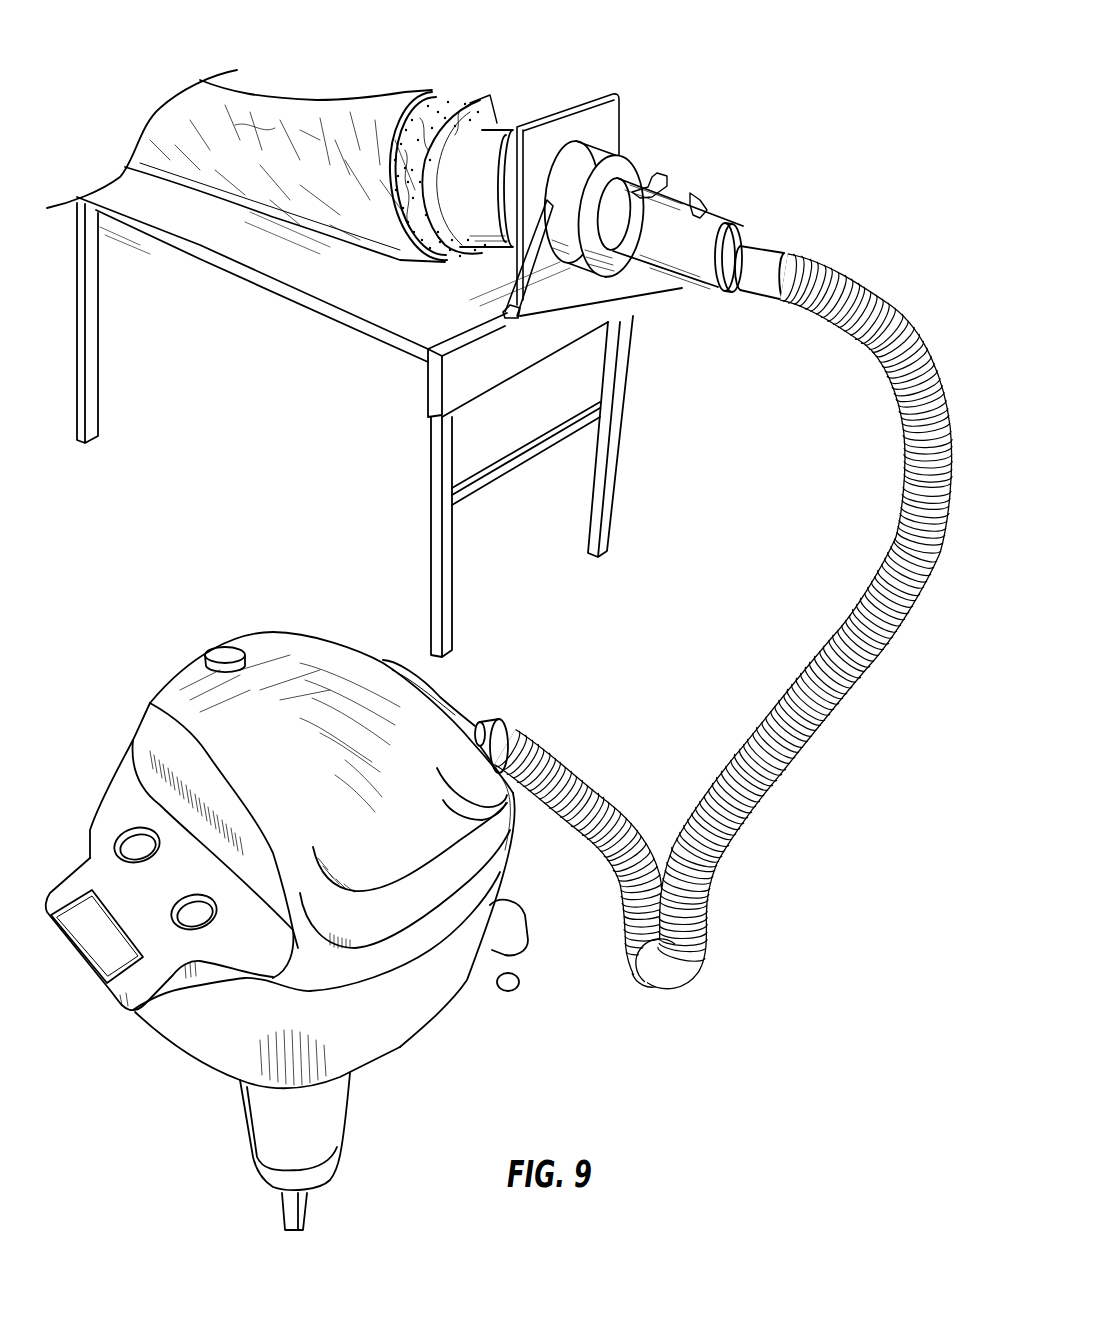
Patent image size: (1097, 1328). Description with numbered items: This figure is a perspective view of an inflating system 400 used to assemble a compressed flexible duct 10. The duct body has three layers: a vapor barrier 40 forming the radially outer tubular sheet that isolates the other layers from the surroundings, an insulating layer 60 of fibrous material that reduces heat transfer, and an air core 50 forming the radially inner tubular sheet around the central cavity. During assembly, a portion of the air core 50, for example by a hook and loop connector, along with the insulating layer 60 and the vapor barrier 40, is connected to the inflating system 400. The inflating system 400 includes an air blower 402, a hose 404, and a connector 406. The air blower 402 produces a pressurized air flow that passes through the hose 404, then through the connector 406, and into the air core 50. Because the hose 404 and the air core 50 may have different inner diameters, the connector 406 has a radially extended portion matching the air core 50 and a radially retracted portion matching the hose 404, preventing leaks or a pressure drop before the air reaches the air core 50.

The flexible duct 10 is at (281, 110).
The vapor barrier 40 is at (440, 92).
The insulating layer 60 is at (477, 100).
The air core 50 is at (503, 133).
The connector 406 is at (597, 153).
The inflating system 400 is at (772, 170).
The hose 404 is at (877, 294).
The air blower 402 is at (290, 640).